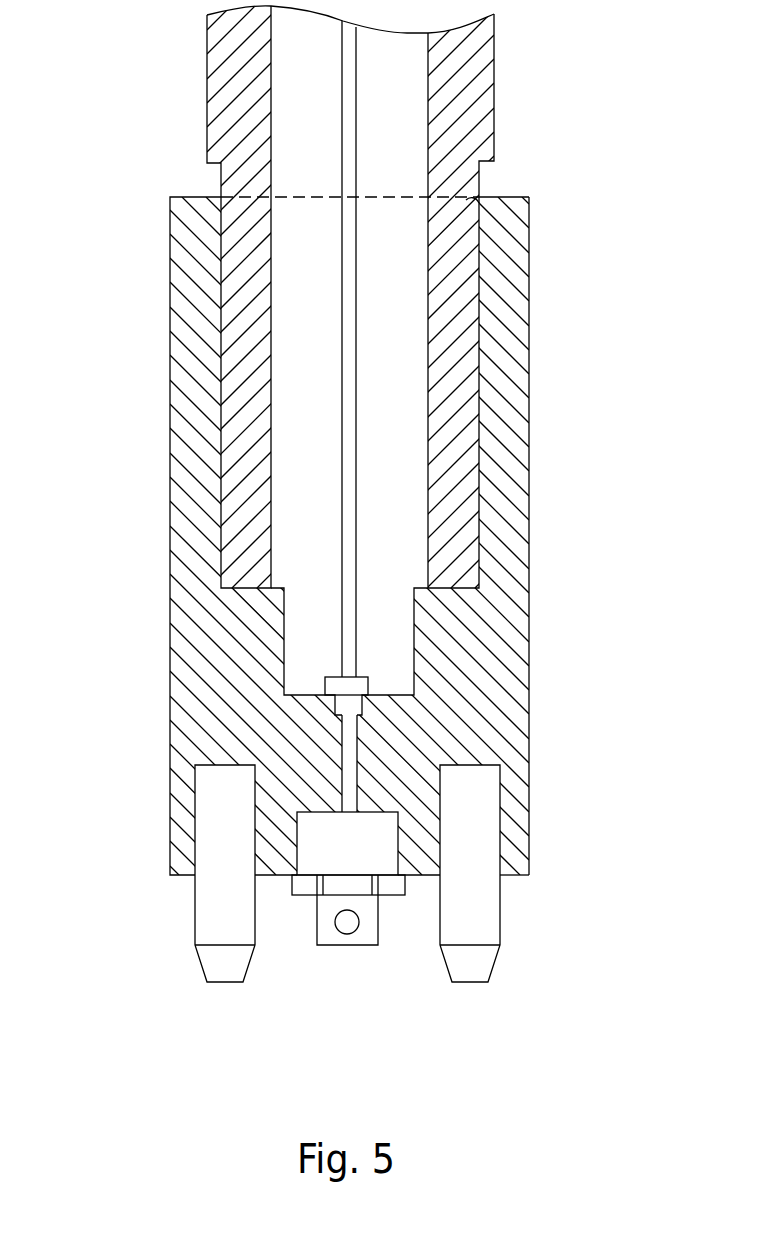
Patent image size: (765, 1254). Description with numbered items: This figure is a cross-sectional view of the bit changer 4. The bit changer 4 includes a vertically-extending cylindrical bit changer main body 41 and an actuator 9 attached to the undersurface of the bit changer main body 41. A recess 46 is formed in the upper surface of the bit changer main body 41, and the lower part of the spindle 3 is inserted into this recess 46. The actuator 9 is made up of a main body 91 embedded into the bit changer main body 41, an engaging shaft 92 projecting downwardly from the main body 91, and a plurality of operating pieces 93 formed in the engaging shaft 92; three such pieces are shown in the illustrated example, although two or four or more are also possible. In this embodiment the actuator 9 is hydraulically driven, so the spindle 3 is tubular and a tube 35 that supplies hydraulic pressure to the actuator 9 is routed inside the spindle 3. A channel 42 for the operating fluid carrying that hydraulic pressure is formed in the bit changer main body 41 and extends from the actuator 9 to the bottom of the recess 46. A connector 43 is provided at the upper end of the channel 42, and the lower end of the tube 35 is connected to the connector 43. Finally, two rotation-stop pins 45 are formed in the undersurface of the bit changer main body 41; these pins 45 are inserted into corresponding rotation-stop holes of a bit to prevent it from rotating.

The spindle 3 is at (470, 85).
The bit changer 4 is at (529, 325).
The bit changer main body 41 is at (508, 492).
The recess 46 is at (472, 208).
The tube 35 is at (348, 400).
The connector 43 is at (360, 677).
The channel 42 is at (349, 758).
The main body 91 is at (313, 848).
The rotation-stop pins 45 is at (220, 900).
The actuator 9 is at (328, 946).
The engaging shaft 92 is at (372, 922).
The operating pieces 93 is at (352, 927).